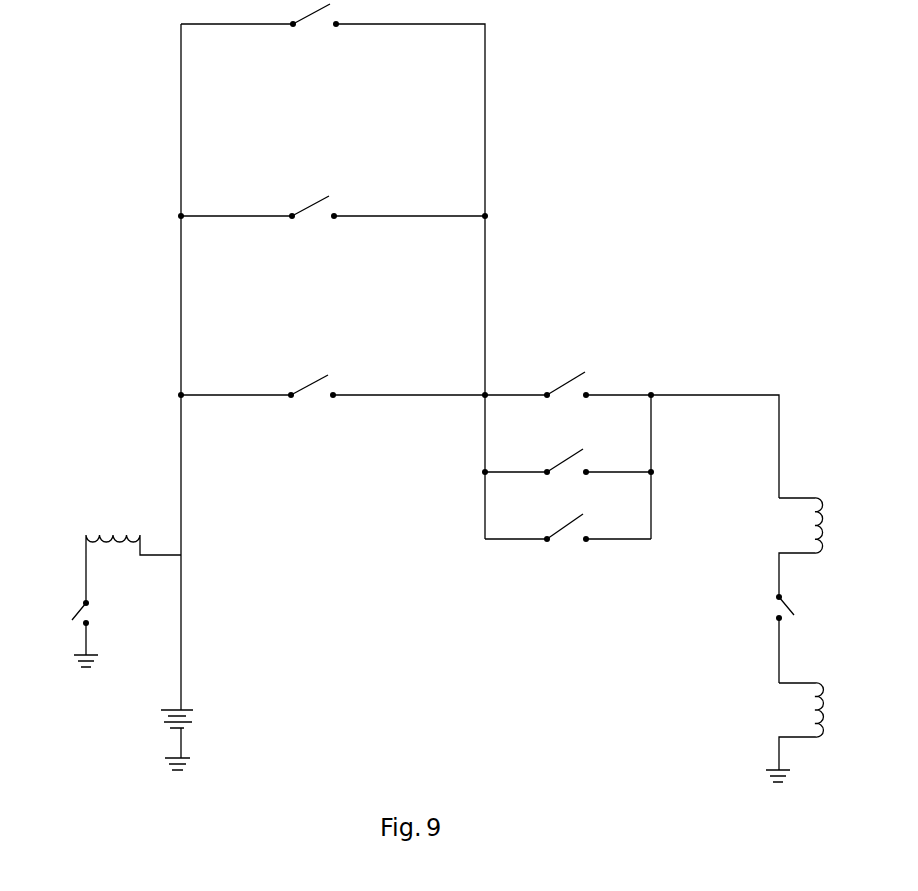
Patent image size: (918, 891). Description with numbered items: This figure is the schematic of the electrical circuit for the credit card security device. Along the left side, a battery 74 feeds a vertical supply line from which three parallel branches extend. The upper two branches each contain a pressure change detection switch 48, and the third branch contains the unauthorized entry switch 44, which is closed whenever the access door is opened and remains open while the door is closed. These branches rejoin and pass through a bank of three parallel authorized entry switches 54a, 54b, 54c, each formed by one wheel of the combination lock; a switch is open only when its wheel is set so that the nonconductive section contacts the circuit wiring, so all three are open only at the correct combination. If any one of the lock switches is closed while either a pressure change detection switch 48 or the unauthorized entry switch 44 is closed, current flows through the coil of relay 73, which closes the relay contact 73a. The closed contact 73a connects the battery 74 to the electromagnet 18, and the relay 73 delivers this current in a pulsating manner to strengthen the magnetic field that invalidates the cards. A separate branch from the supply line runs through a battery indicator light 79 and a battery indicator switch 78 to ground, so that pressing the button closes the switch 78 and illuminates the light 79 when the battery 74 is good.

The pressure change detection switch 48 is at (313, 33).
The unauthorized entry switch 44 is at (313, 403).
The authorized entry switch 54a is at (590, 382).
The authorized entry switch 54b is at (587, 458).
The authorized entry switch 54c is at (580, 547).
The relay 73 is at (836, 553).
The relay contact 73a is at (770, 605).
The electromagnet 18 is at (790, 717).
The battery indicator light 79 is at (114, 522).
The battery indicator switch 78 is at (70, 608).
The battery 74 is at (198, 718).